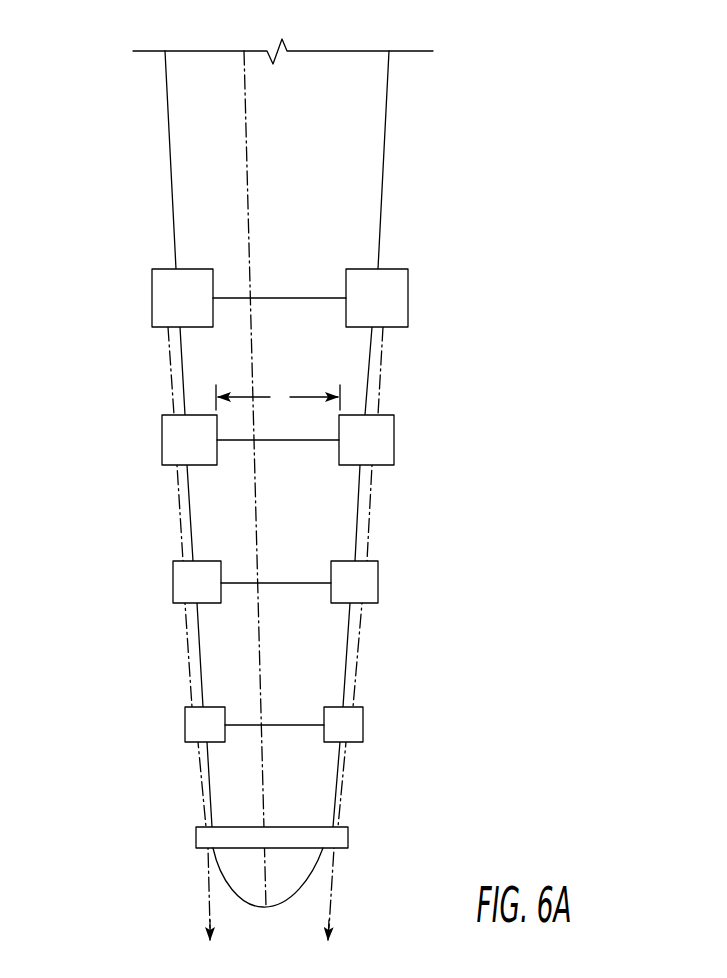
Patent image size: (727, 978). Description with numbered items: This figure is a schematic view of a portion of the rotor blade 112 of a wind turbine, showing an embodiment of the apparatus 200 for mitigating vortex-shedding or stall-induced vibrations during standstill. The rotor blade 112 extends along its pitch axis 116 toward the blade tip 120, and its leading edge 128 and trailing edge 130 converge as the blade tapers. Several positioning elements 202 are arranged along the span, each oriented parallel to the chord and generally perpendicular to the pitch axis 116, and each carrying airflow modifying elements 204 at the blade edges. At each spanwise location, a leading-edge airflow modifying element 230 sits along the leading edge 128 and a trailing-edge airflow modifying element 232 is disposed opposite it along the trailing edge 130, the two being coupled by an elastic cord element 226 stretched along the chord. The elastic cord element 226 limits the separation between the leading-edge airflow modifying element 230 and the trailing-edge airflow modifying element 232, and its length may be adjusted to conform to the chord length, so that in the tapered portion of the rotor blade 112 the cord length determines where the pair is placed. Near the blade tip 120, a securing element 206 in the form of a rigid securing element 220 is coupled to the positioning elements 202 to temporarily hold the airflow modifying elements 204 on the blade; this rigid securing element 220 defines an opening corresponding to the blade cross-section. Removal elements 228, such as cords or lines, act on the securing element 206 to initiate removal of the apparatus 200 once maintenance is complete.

The apparatus 200 is at (547, 82).
The rotor blade 112 is at (330, 78).
The pitch axis 116 is at (242, 76).
The leading edge 128 is at (169, 150).
The trailing edge 130 is at (385, 137).
The airflow modifying element 204 is at (276, 483).
The leading-edge airflow modifying element 230 is at (158, 298).
The trailing-edge airflow modifying element 232 is at (404, 300).
The positioning element 202 is at (279, 472).
The elastic cord element 226 is at (297, 298).
The securing element 206 is at (317, 809).
The rigid securing element 220 is at (346, 838).
The removal element 228 is at (205, 888).
The blade tip 120 is at (252, 908).